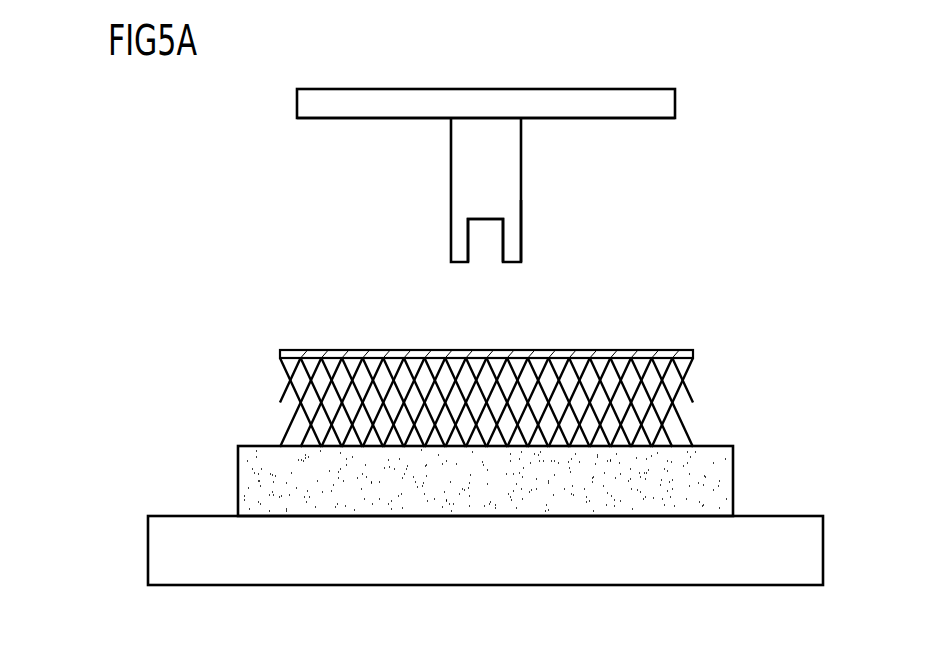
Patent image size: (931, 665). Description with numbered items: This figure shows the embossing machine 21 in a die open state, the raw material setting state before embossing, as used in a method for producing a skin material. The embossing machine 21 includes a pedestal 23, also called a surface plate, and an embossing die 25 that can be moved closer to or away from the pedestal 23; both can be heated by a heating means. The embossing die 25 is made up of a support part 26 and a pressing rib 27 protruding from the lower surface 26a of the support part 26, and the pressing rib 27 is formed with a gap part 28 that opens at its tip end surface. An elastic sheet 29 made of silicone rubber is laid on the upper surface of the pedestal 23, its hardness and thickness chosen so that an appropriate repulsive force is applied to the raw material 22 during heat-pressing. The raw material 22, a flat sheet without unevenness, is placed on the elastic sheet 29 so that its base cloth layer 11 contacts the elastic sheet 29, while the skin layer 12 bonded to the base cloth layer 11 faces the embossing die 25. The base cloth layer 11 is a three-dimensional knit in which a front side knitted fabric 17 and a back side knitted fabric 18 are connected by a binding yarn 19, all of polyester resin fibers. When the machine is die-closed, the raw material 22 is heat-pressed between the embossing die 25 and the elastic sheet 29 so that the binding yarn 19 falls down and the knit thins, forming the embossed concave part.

The base cloth layer 11 is at (544, 371).
The skin layer 12 is at (563, 350).
The front side knitted fabric 17 is at (694, 366).
The back side knitted fabric 18 is at (688, 446).
The binding yarn 19 is at (688, 418).
The embossing machine 21 is at (567, 201).
The raw material 22 is at (651, 338).
The pedestal 23 is at (816, 516).
The embossing die 25 is at (546, 187).
The support part 26 is at (663, 119).
The lower surface of plate 26a is at (625, 119).
The pressing rib 27 is at (522, 224).
The gap part 28 is at (503, 240).
The elastic sheet 29 is at (734, 481).